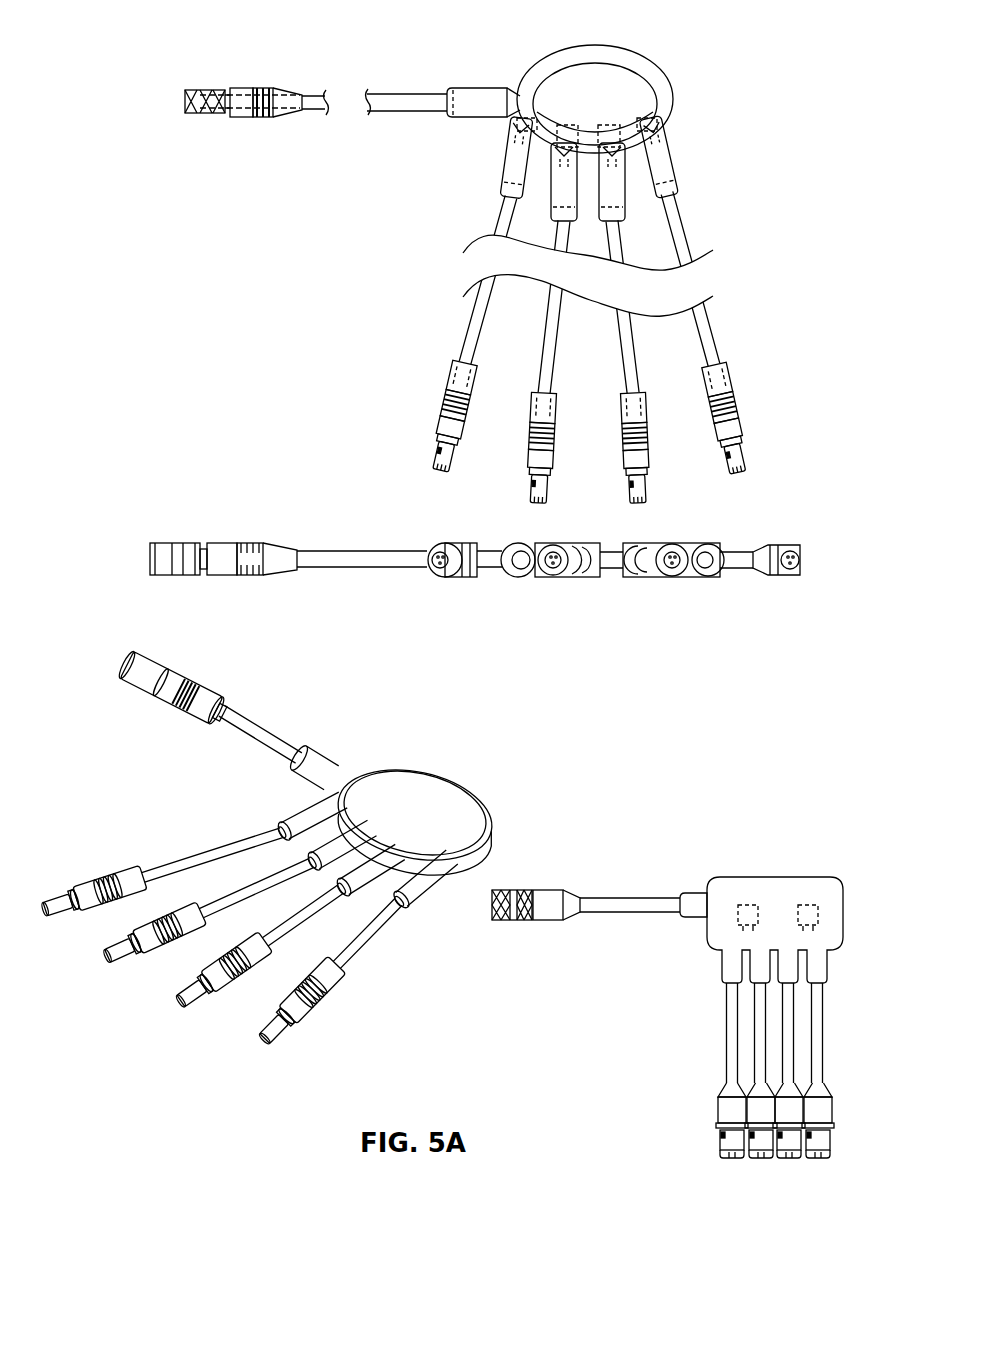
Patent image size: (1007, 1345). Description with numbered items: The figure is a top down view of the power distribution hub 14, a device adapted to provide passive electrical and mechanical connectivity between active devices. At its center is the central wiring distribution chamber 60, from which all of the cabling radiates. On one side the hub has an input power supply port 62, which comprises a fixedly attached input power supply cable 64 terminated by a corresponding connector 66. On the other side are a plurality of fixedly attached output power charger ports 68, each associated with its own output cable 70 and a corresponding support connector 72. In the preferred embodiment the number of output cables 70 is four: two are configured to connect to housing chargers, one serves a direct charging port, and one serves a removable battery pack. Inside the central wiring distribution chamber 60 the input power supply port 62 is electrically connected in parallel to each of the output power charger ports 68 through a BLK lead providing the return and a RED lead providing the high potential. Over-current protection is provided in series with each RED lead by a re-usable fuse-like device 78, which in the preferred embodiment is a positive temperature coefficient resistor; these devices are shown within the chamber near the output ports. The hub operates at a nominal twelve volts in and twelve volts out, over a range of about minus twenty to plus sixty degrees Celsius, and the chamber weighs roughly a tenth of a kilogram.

The power distribution hub 14 is at (715, 53).
The central wiring distribution chamber 60 is at (563, 78).
The input power supply port 62 is at (437, 93).
The input power supply cable 64 is at (492, 118).
The connector 66 is at (250, 90).
The output power charger port 68 is at (505, 175).
The output cable 70 is at (472, 325).
The support connector 72 is at (443, 426).
The re-usable fuse-like device 78 is at (528, 118).